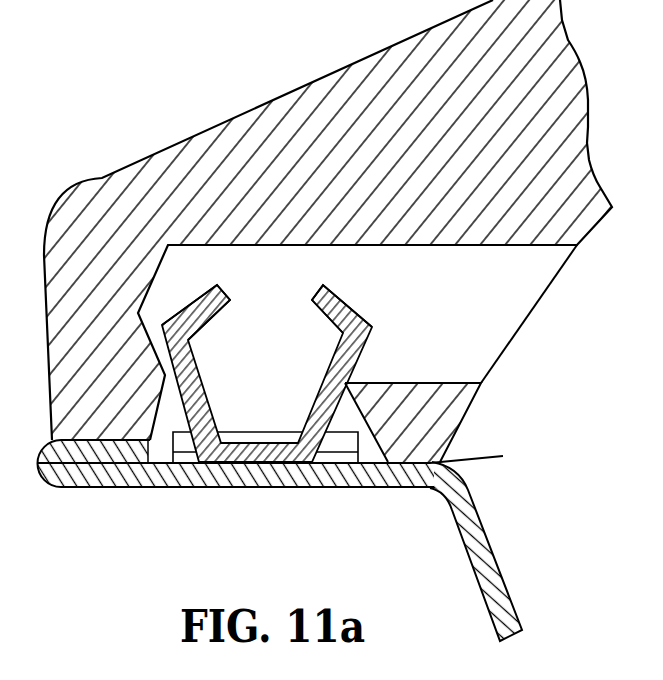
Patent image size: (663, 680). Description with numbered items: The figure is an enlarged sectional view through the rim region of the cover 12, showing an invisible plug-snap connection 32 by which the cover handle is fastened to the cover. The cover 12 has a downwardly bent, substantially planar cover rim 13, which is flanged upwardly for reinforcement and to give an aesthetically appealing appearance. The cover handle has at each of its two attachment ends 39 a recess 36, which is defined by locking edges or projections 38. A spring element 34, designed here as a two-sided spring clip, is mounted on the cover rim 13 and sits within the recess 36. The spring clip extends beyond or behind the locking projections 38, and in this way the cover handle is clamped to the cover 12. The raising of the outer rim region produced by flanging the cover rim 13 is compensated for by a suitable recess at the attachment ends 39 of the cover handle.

The attachment end 39 is at (268, 130).
The locking projection 38 is at (168, 380).
The recess 36 is at (267, 373).
The spring element 34 is at (316, 403).
The plug-snap connection 32 is at (140, 532).
The cover rim 13 is at (55, 492).
The cover 12 is at (488, 540).